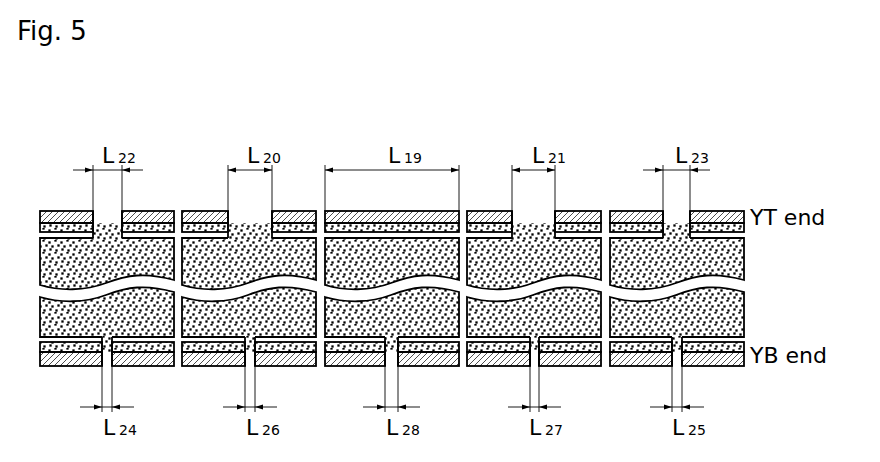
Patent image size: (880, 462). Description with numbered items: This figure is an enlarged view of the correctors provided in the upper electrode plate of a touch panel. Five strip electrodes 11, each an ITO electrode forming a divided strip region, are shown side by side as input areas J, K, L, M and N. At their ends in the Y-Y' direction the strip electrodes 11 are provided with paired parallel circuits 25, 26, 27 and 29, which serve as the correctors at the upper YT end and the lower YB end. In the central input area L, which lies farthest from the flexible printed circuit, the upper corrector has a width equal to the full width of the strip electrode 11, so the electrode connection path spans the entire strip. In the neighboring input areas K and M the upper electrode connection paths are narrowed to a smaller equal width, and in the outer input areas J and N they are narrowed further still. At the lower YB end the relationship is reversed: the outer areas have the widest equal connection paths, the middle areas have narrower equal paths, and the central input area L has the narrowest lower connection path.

The strip electrode 11 is at (727, 253).
The paired parallel circuit 25 is at (137, 211).
The paired parallel circuit 26 is at (277, 211).
The paired parallel circuit 27 is at (365, 211).
The central input area L is at (560, 211).
The paired parallel circuit 29 is at (713, 211).